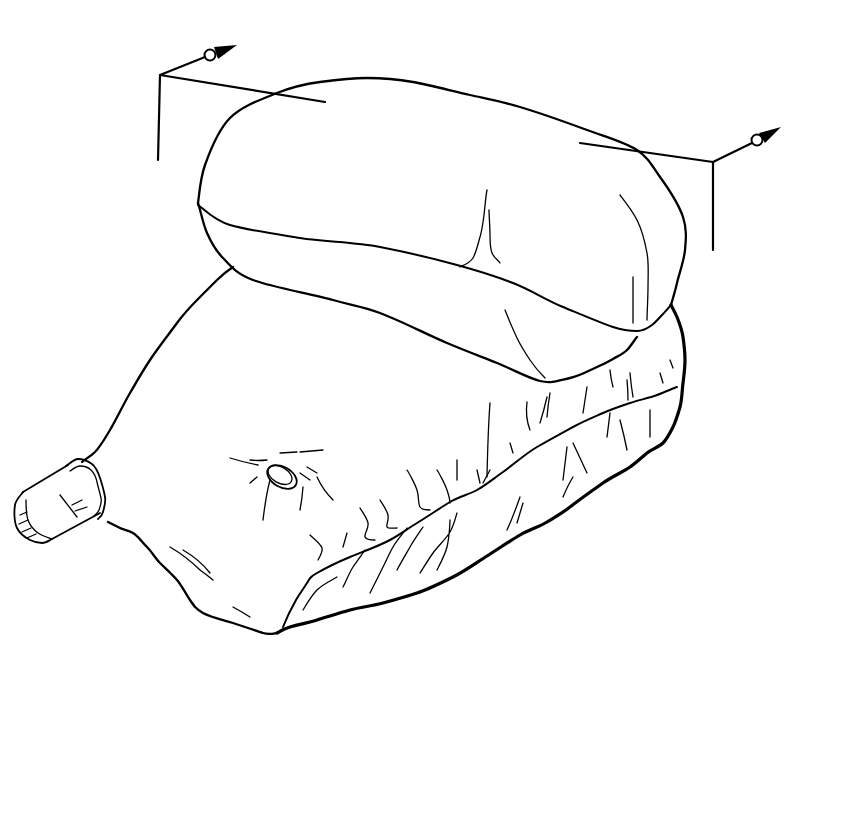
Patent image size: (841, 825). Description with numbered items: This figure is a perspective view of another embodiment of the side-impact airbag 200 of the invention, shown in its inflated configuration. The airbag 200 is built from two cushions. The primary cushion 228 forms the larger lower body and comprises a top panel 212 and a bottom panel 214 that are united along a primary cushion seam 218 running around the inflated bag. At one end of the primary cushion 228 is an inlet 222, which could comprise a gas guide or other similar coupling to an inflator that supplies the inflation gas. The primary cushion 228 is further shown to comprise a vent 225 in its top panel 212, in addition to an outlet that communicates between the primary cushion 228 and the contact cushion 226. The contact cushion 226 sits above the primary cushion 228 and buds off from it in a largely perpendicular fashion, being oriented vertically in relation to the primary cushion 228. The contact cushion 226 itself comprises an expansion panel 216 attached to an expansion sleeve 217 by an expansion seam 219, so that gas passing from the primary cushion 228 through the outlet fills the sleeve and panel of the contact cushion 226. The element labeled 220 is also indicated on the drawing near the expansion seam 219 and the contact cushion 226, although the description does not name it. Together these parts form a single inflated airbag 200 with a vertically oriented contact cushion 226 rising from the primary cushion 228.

The airbag 200 is at (158, 242).
The contact cushion 226 is at (534, 130).
The primary cushion 228 is at (178, 377).
The expansion panel 216 is at (630, 263).
The expansion seam 219 is at (673, 427).
The fold line 220 is at (610, 333).
The expansion sleeve 217 is at (547, 362).
The primary cushion seam 218 is at (500, 477).
The top panel 212 is at (443, 480).
The bottom panel 214 is at (435, 583).
The vent 225 is at (262, 476).
The inlet 222 is at (73, 527).